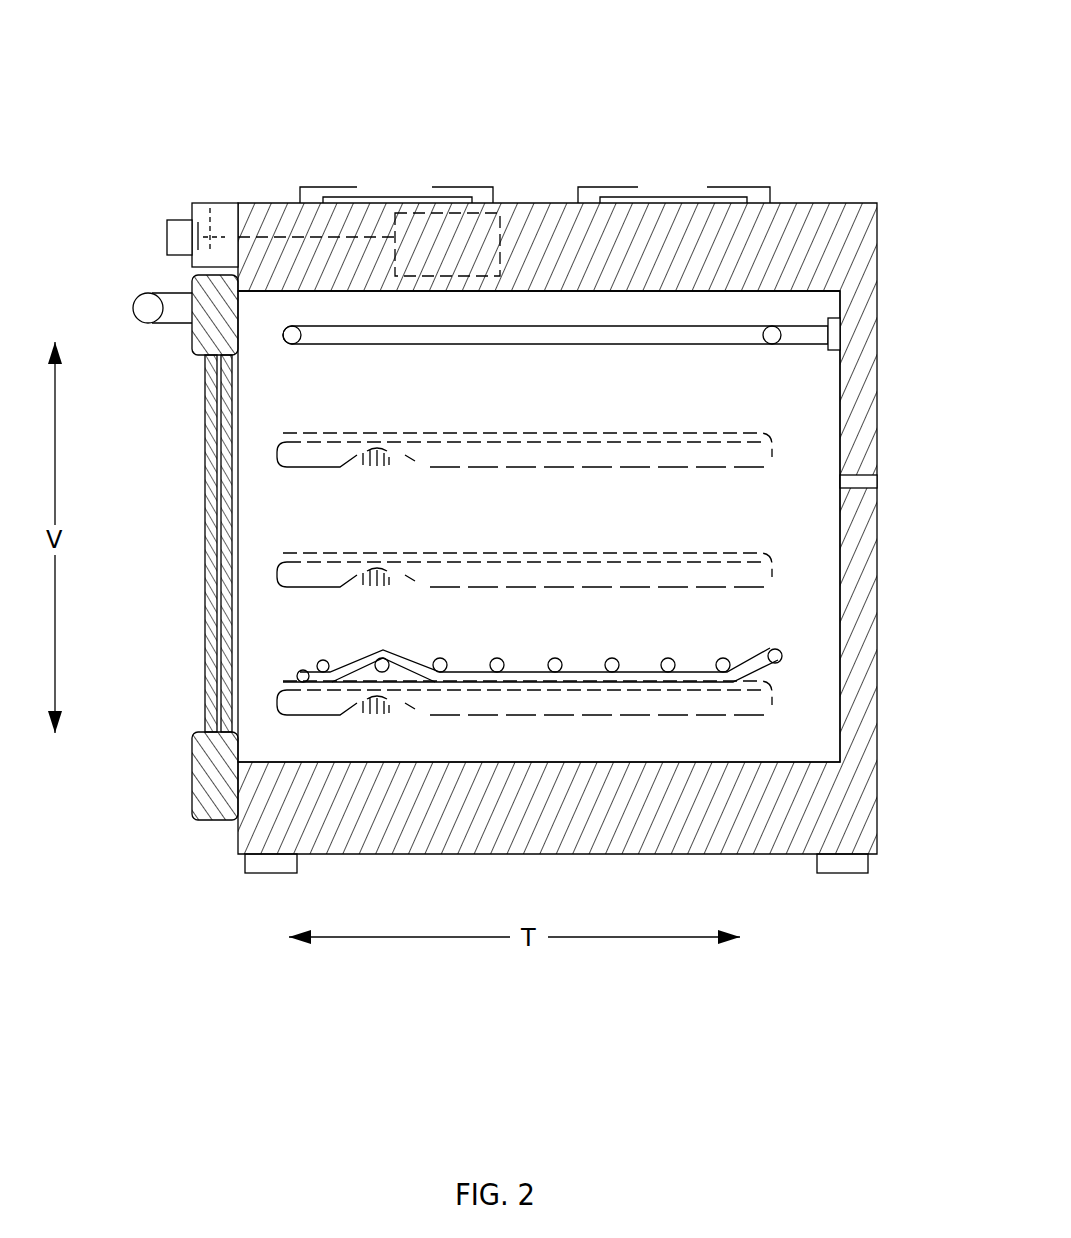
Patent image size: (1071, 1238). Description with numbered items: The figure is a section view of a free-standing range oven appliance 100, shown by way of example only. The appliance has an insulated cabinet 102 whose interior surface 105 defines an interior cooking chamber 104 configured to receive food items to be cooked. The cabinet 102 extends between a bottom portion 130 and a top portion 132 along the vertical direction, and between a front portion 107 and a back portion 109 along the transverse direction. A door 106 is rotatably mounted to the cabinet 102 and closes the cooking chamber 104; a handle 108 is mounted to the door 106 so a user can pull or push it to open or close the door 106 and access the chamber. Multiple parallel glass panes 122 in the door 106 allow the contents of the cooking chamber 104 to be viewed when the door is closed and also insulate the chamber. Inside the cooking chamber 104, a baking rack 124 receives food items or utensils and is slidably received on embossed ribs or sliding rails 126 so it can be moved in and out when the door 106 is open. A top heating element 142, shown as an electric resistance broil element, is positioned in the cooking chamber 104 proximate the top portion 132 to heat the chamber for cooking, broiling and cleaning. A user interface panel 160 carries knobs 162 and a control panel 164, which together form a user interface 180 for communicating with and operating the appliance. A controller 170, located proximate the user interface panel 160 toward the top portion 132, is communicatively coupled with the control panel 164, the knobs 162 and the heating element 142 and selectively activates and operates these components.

The oven appliance 100 is at (910, 208).
The cabinet 102 is at (880, 448).
The cooking chamber 104 is at (793, 531).
The interior surface 105 is at (572, 296).
The door 106 is at (195, 340).
The front portion 107 is at (240, 882).
The handle 108 is at (145, 295).
The back portion 109 is at (866, 882).
The glass panes 122 is at (204, 568).
The baking rack 124 is at (353, 657).
The sliding rails 126 is at (773, 575).
The bottom portion 130 is at (176, 850).
The top portion 132 is at (137, 197).
The top heating element 142 is at (783, 349).
The user interface panel 160 is at (152, 240).
The knobs 162 is at (177, 217).
The control panel 164 is at (254, 202).
The controller 170 is at (428, 184).
The user interface 180 is at (185, 127).